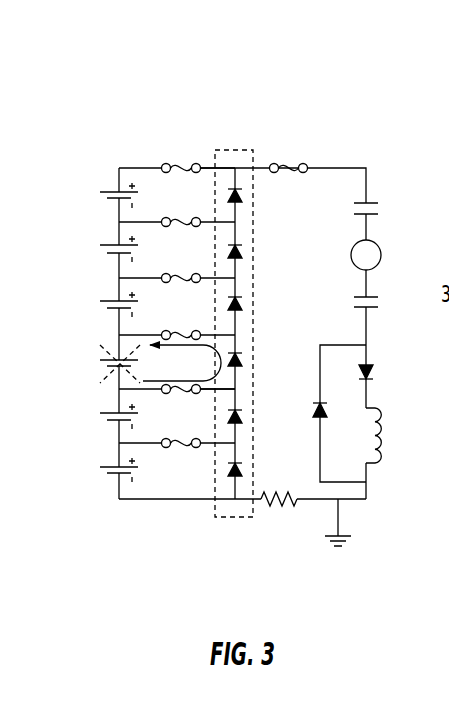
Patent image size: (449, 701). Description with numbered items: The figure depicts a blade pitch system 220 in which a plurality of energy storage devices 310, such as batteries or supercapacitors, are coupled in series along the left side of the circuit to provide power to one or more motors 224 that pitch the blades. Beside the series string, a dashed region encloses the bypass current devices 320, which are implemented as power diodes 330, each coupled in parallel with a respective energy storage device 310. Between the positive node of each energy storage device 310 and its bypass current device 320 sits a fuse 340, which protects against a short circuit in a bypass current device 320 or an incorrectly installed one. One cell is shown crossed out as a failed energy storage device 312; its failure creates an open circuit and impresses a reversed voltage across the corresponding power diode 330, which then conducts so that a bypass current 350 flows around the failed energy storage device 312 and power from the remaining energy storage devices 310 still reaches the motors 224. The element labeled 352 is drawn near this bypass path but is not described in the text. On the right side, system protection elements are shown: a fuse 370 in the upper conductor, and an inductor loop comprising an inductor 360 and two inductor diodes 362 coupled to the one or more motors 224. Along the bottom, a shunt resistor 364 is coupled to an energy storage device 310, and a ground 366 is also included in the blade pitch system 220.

The blade pitch system 220 is at (343, 132).
The motor 224 is at (378, 246).
The energy storage device 310 is at (103, 457).
The failed energy storage device 312 is at (140, 364).
The bypass current device 320 is at (237, 150).
The power diode 330 is at (245, 470).
The fuse 340 is at (173, 324).
The bypass current 350 is at (209, 345).
The bypass conductor 352 is at (228, 370).
The inductor 360 is at (389, 421).
The inductor diode 362 is at (335, 408).
The shunt resistor 364 is at (278, 508).
The ground 366 is at (350, 545).
The fuse 370 is at (306, 174).